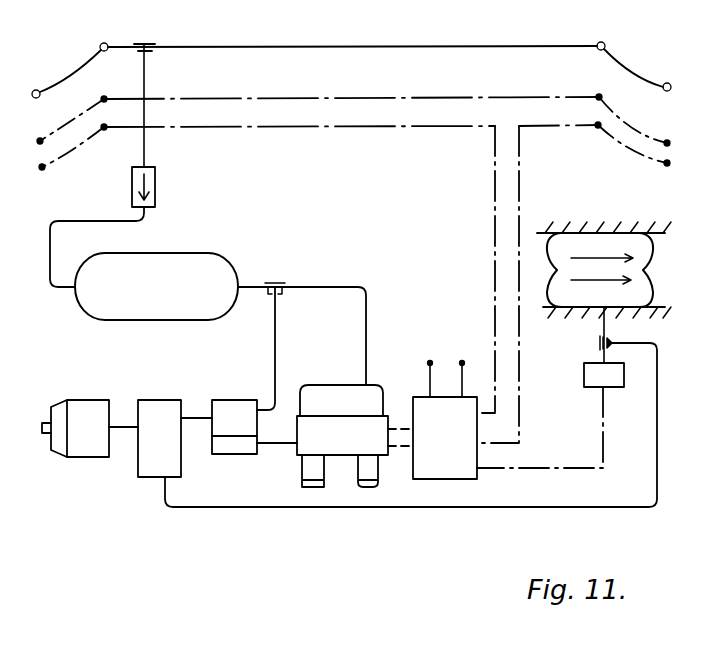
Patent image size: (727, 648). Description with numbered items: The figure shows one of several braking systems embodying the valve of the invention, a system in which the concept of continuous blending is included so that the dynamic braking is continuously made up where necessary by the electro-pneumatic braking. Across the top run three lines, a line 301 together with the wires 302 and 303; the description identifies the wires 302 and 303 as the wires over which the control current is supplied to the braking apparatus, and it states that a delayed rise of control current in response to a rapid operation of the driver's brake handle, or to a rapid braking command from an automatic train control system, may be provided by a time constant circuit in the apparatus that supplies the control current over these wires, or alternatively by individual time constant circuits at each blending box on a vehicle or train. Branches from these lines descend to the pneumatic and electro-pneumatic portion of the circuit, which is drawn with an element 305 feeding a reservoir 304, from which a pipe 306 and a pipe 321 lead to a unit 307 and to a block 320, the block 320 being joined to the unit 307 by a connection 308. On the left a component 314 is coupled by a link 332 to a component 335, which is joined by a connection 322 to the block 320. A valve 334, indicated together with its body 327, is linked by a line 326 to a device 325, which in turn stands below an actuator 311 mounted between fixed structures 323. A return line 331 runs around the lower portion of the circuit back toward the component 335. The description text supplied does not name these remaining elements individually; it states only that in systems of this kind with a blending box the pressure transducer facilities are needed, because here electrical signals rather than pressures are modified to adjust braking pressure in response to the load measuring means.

The first supply line 301 is at (380, 45).
The wire 302 is at (385, 97).
The wire 303 is at (393, 127).
The reservoir tank 304 is at (213, 264).
The check valve 305 is at (148, 182).
The pipe 306 is at (330, 288).
The control valve unit 307 is at (322, 392).
The connecting pipe 308 is at (280, 447).
The bellows actuator 311 is at (625, 267).
The motor 314 is at (92, 410).
The valve block 320 is at (232, 409).
The supply pipe 321 is at (280, 341).
The connection 322 is at (196, 418).
The fixed structure 323 is at (698, 336).
The pressure switch 325 is at (584, 376).
The control line 326 is at (552, 455).
The valve body 327 is at (425, 410).
The return line 331 is at (657, 442).
The shaft 332 is at (124, 420).
The solenoid valve 334 is at (432, 408).
The pump 335 is at (158, 404).